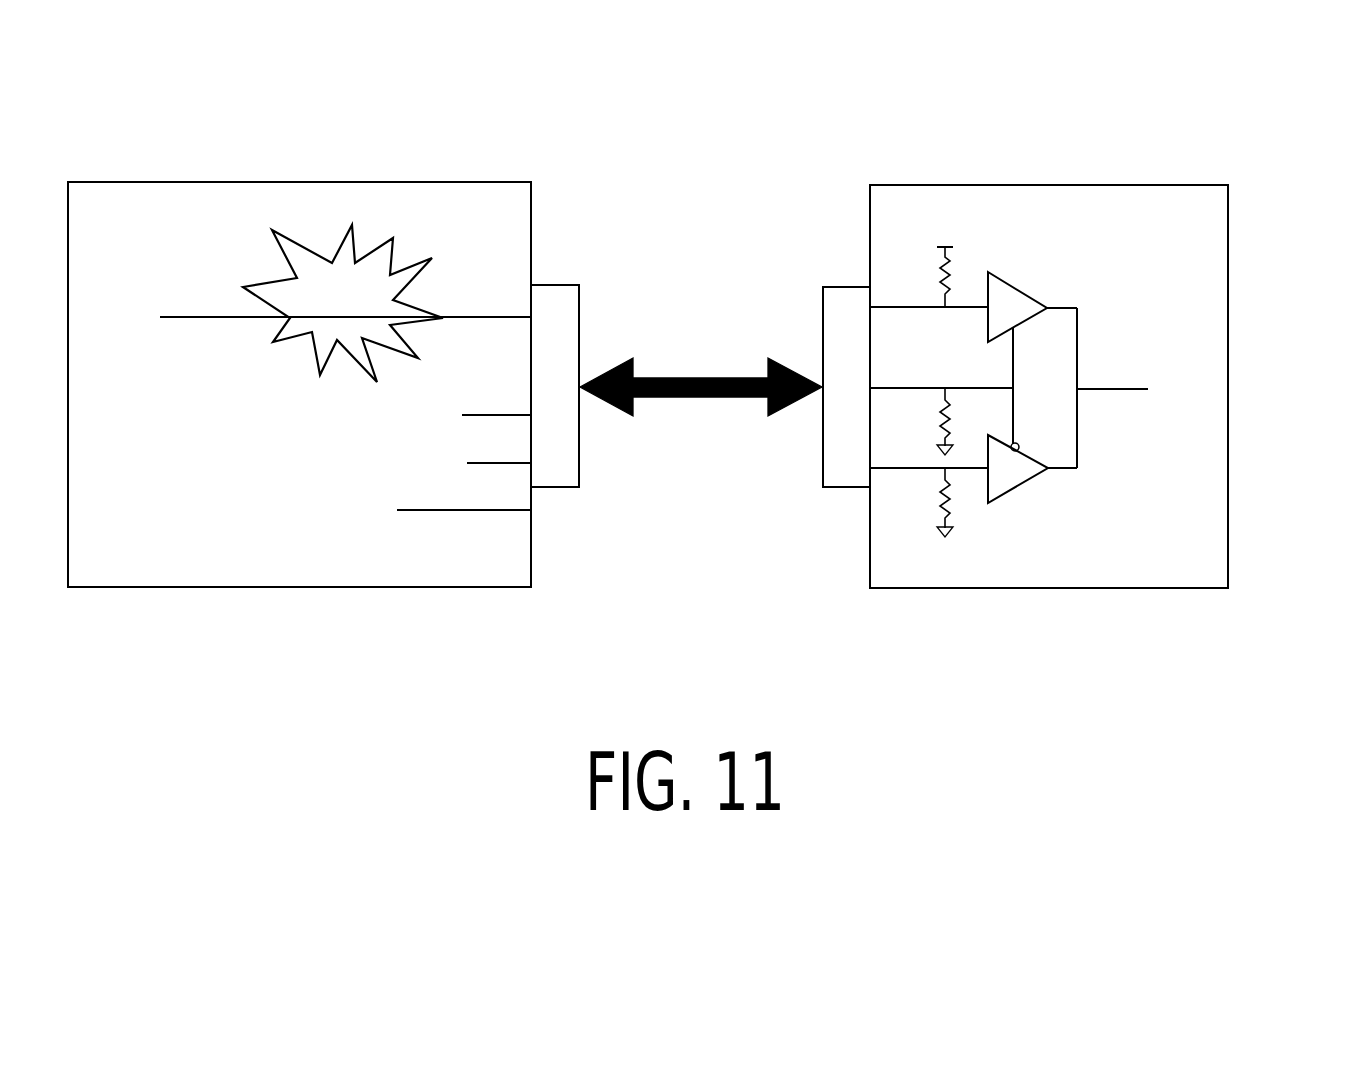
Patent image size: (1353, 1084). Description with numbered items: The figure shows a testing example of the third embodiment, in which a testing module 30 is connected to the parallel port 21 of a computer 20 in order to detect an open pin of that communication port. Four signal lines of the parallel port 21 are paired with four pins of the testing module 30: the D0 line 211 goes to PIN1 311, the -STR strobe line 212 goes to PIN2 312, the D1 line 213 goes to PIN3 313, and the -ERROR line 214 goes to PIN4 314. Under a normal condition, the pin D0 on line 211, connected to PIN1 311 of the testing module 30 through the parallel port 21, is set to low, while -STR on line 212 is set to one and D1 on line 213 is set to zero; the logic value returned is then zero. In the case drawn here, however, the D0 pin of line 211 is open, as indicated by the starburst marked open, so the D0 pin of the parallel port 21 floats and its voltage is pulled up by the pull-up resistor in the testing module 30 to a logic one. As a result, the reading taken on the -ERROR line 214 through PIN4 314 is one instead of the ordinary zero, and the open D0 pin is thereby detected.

The computer 20 is at (223, 218).
The parallel port 21 is at (555, 300).
The D0 line 211 is at (510, 267).
The -STR line 212 is at (523, 395).
The D1 line 213 is at (517, 448).
The -ERROR line 214 is at (520, 500).
The testing module 30 is at (1025, 183).
The PIN1 of testing module 311 is at (927, 305).
The PIN2 of testing module 312 is at (870, 388).
The PIN3 of testing module 313 is at (890, 468).
The PIN4 of testing module 314 is at (1130, 390).